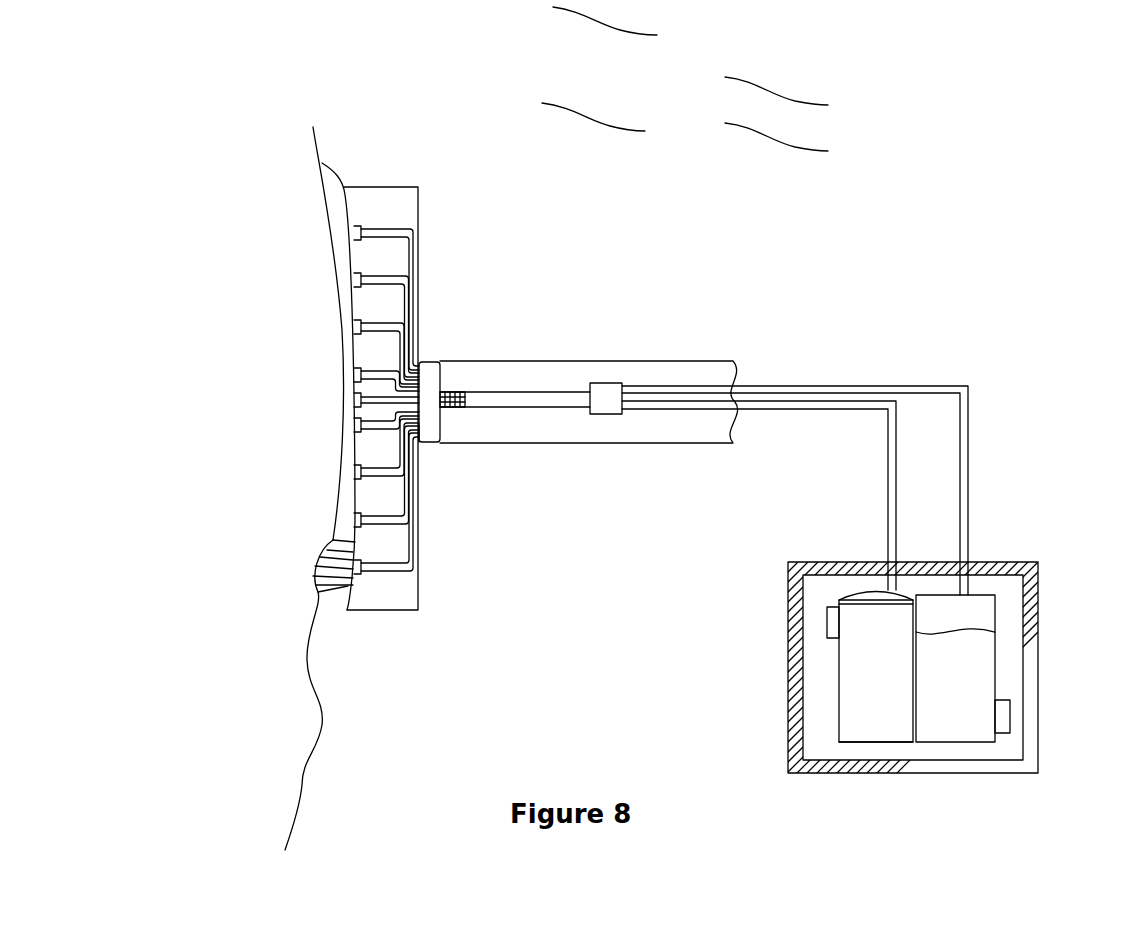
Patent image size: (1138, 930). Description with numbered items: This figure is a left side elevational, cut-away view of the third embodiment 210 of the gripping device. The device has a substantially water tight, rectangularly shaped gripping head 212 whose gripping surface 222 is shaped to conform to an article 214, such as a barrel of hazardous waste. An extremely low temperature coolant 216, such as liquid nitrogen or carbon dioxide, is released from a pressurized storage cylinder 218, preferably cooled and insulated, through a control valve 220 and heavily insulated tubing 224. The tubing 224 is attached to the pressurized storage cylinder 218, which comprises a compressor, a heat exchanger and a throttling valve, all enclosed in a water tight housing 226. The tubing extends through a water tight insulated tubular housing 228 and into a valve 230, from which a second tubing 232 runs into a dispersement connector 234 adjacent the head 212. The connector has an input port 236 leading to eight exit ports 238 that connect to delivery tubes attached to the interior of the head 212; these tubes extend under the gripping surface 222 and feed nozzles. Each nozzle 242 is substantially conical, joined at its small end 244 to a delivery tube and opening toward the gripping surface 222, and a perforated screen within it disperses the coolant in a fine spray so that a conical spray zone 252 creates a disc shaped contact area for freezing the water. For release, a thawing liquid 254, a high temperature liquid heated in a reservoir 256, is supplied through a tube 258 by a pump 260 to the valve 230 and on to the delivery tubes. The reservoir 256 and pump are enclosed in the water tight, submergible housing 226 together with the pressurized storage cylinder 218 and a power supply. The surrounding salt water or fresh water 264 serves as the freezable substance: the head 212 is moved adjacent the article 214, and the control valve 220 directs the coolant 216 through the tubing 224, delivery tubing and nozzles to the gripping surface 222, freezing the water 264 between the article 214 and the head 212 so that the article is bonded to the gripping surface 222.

The third embodiment 210 is at (608, 300).
The gripping head 212 is at (420, 203).
The article 214 is at (318, 135).
The extremely low temperature coolant 216 is at (877, 727).
The pressurized storage cylinder 218 is at (839, 698).
The control valve 220 is at (827, 618).
The gripping surface 222 is at (323, 163).
The heavily insulated tubing 224 is at (837, 402).
The water tight housing 226 is at (790, 612).
The water tight insulated tubular housing 228 is at (657, 361).
The valve 230 is at (610, 400).
The second tubing 232 is at (557, 392).
The dispersement connector 234 is at (430, 357).
The input port 236 is at (461, 392).
The exit ports 238 is at (418, 420).
The nozzle 242 is at (352, 228).
The small end 244 is at (387, 227).
The conical spray zone 252 is at (332, 590).
The thawing liquid 254 is at (940, 732).
The reservoir 256 is at (995, 662).
The tube 258 is at (877, 392).
The pump 260 is at (1010, 720).
The salt water or fresh water 264 is at (770, 73).